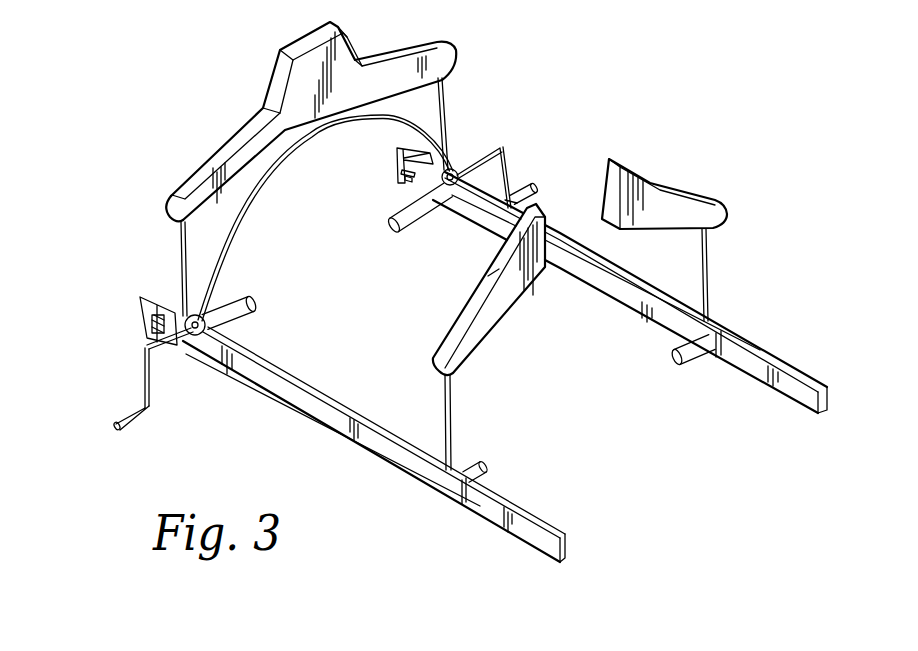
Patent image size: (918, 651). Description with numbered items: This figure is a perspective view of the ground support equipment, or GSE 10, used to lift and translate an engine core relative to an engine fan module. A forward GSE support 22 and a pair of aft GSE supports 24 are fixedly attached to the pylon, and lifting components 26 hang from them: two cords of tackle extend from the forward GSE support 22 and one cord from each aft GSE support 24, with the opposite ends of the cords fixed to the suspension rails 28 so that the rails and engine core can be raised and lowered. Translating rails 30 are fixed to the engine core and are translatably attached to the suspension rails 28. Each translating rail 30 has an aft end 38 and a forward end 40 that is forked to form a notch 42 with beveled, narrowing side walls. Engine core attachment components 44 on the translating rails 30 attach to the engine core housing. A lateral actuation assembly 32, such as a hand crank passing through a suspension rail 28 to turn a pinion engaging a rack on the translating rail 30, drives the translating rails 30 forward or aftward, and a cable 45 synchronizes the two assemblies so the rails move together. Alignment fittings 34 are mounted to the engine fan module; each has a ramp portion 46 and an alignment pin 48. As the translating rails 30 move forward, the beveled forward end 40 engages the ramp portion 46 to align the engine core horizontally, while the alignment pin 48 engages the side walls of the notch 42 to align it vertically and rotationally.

The GSE 10 is at (74, 167).
The forward GSE support 22 is at (383, 78).
The aft GSE support 24 is at (682, 208).
The lifting components 26 is at (439, 105).
The suspension rail 28 is at (800, 390).
The translating rail 30 is at (607, 296).
The lateral actuation assembly 32 is at (145, 383).
The alignment fitting 34 is at (145, 323).
The aft end 38 is at (714, 358).
The forward end 40 is at (157, 297).
The notch 42 is at (397, 163).
The engine core attachment components 44 is at (254, 313).
The cable 45 is at (255, 182).
The ramp portion 46 is at (400, 150).
The alignment pin 48 is at (410, 193).